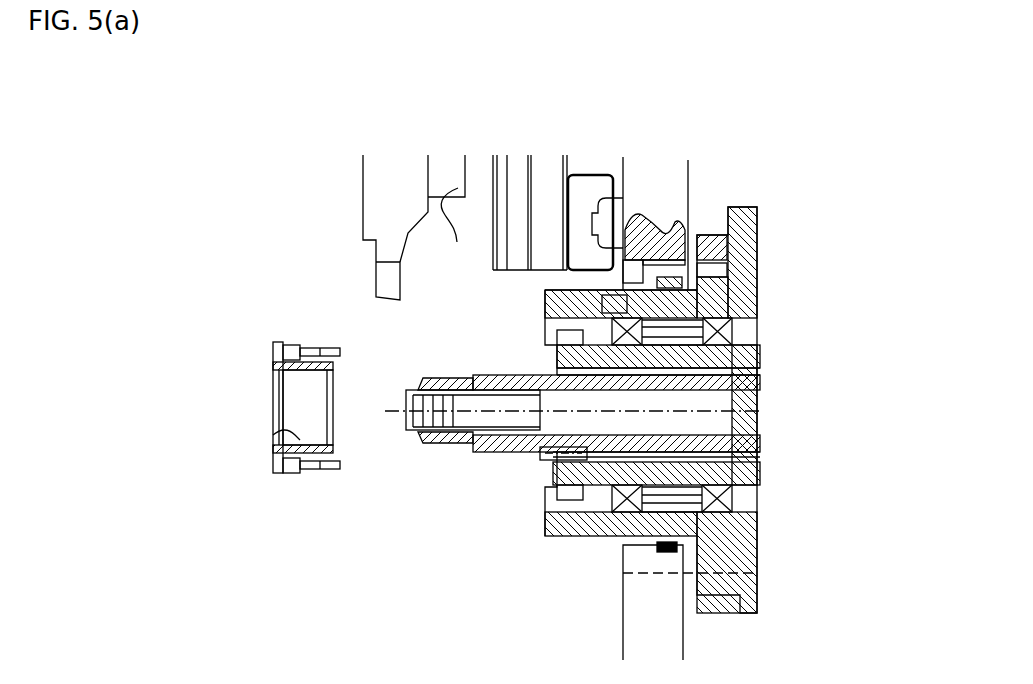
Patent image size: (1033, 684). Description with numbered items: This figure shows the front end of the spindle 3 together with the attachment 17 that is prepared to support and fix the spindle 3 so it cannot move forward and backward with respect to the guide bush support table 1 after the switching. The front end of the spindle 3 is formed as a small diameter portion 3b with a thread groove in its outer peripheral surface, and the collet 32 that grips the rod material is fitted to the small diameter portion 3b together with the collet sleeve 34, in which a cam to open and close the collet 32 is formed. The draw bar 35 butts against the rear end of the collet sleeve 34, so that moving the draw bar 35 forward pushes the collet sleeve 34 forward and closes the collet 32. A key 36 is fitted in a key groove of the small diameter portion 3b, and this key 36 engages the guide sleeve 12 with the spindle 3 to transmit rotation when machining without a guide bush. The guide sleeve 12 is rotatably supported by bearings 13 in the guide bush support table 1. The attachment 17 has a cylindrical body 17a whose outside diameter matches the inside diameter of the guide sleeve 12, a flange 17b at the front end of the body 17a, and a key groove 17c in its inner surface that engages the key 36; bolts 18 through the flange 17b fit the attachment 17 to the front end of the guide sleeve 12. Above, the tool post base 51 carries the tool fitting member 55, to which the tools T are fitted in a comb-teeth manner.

The guide bush support table 1 is at (760, 213).
The spindle 3 is at (752, 365).
The small diameter portion 3b is at (515, 375).
The guide sleeve 12 is at (750, 478).
The bearing 13 is at (623, 512).
The attachment 17 is at (268, 358).
The cylindrical body 17a is at (314, 352).
The flange 17b is at (282, 477).
The key groove 17c is at (275, 432).
The bolt 18 is at (306, 475).
The collet 32 is at (423, 443).
The collet sleeve 34 is at (446, 372).
The draw bar 35 is at (760, 382).
The key 36 is at (543, 455).
The tool post base 51 is at (688, 160).
The tool fitting member 55 is at (455, 228).
The tool T is at (352, 250).